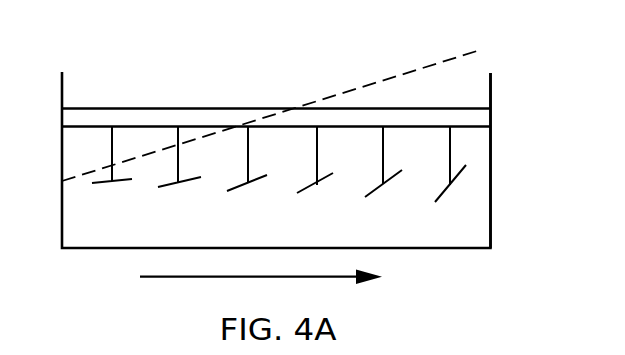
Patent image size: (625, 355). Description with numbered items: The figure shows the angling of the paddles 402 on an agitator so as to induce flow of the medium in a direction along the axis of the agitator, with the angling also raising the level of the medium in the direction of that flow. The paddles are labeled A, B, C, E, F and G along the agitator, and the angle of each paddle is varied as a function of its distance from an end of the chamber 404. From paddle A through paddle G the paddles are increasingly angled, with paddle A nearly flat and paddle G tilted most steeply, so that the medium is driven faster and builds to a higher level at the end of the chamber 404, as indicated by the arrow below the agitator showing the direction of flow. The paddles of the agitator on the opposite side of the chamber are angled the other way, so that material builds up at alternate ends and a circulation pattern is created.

The paddles 402 is at (276, 149).
The chamber 404 is at (491, 237).
The paddle 402A A is at (112, 170).
The paddle 402B B is at (179, 170).
The paddle 402C C is at (247, 170).
The paddle 402E E is at (315, 170).
The paddle 402F F is at (383, 170).
The paddle 402G G is at (455, 170).